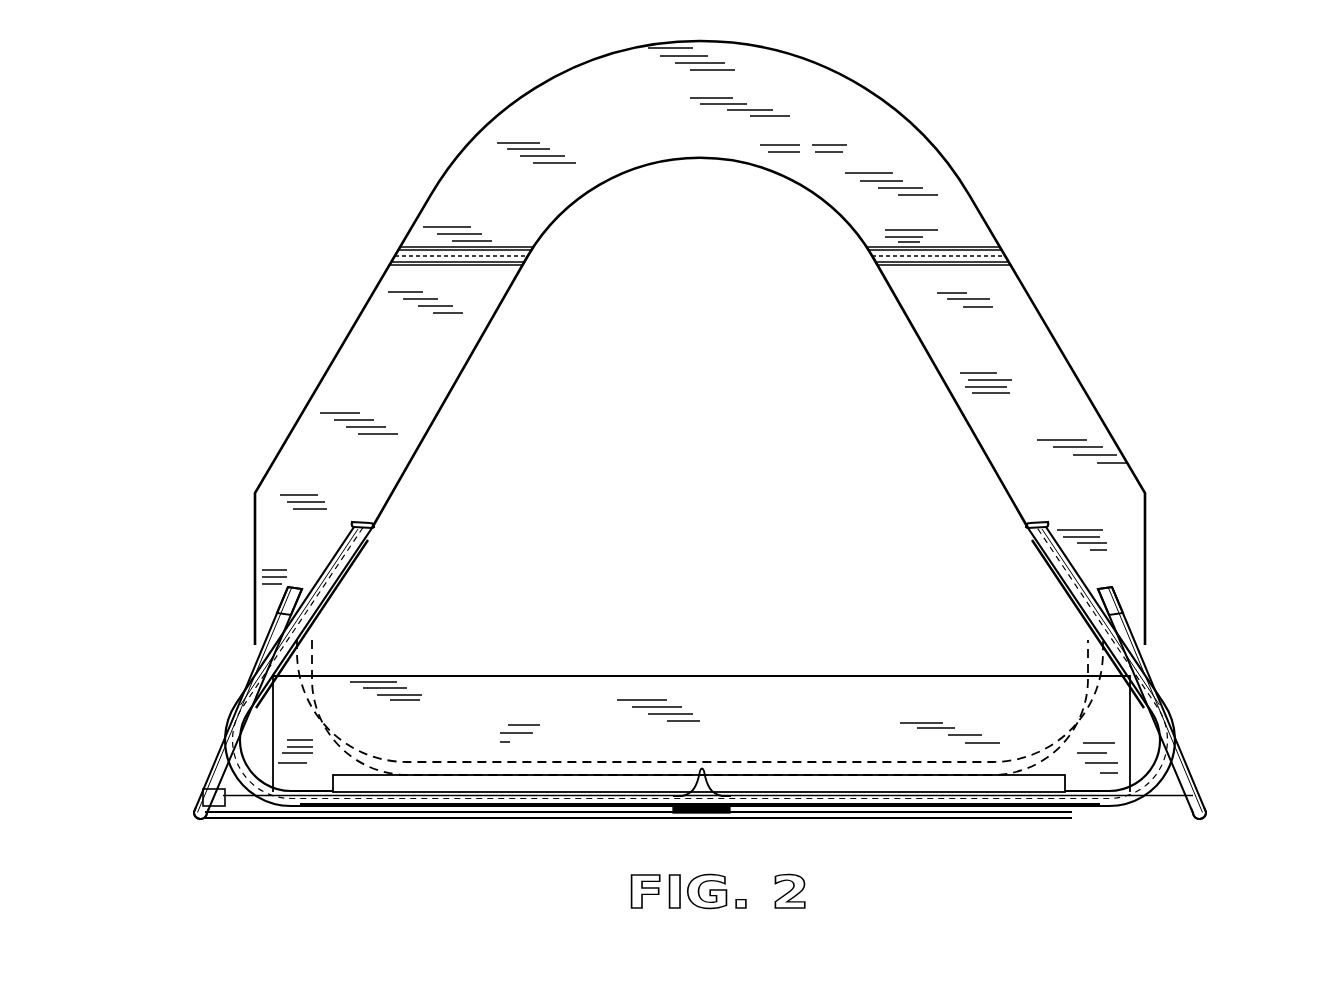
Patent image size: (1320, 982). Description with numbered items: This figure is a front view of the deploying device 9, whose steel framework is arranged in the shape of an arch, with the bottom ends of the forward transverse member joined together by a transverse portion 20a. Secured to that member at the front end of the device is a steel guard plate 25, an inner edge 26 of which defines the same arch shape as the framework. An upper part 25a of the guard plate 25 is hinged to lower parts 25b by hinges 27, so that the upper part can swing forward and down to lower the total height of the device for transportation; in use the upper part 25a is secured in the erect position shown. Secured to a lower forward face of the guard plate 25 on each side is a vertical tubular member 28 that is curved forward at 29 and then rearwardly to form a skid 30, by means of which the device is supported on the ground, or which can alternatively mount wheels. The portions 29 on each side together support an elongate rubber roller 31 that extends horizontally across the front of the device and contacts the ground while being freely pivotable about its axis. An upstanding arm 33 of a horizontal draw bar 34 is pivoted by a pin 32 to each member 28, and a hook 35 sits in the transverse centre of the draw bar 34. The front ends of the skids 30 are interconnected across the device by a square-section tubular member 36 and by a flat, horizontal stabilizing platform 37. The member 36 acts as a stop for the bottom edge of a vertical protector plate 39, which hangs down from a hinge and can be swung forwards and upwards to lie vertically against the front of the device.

The deploying device 9 is at (360, 143).
The guard plate 25 is at (432, 166).
The upper part of the guard plate 25a is at (883, 135).
The lower parts of the guard plate 25b is at (345, 375).
The inner edge of the guard plate 26 is at (447, 397).
The hinges 27 is at (413, 257).
The vertical tubular member 28 is at (362, 545).
The curved portion of tubular member 29 is at (213, 775).
The skid 30 is at (197, 810).
The rubber roller 31 is at (993, 788).
The pin 32 is at (290, 593).
The upstanding arm 33 is at (235, 710).
The draw bar 34 is at (578, 800).
The hook 35 is at (700, 800).
The square-section tubular member 36 is at (227, 795).
The stabilizing platform 37 is at (252, 808).
The protector plate 39 is at (582, 693).
The transverse portion 20a is at (422, 757).